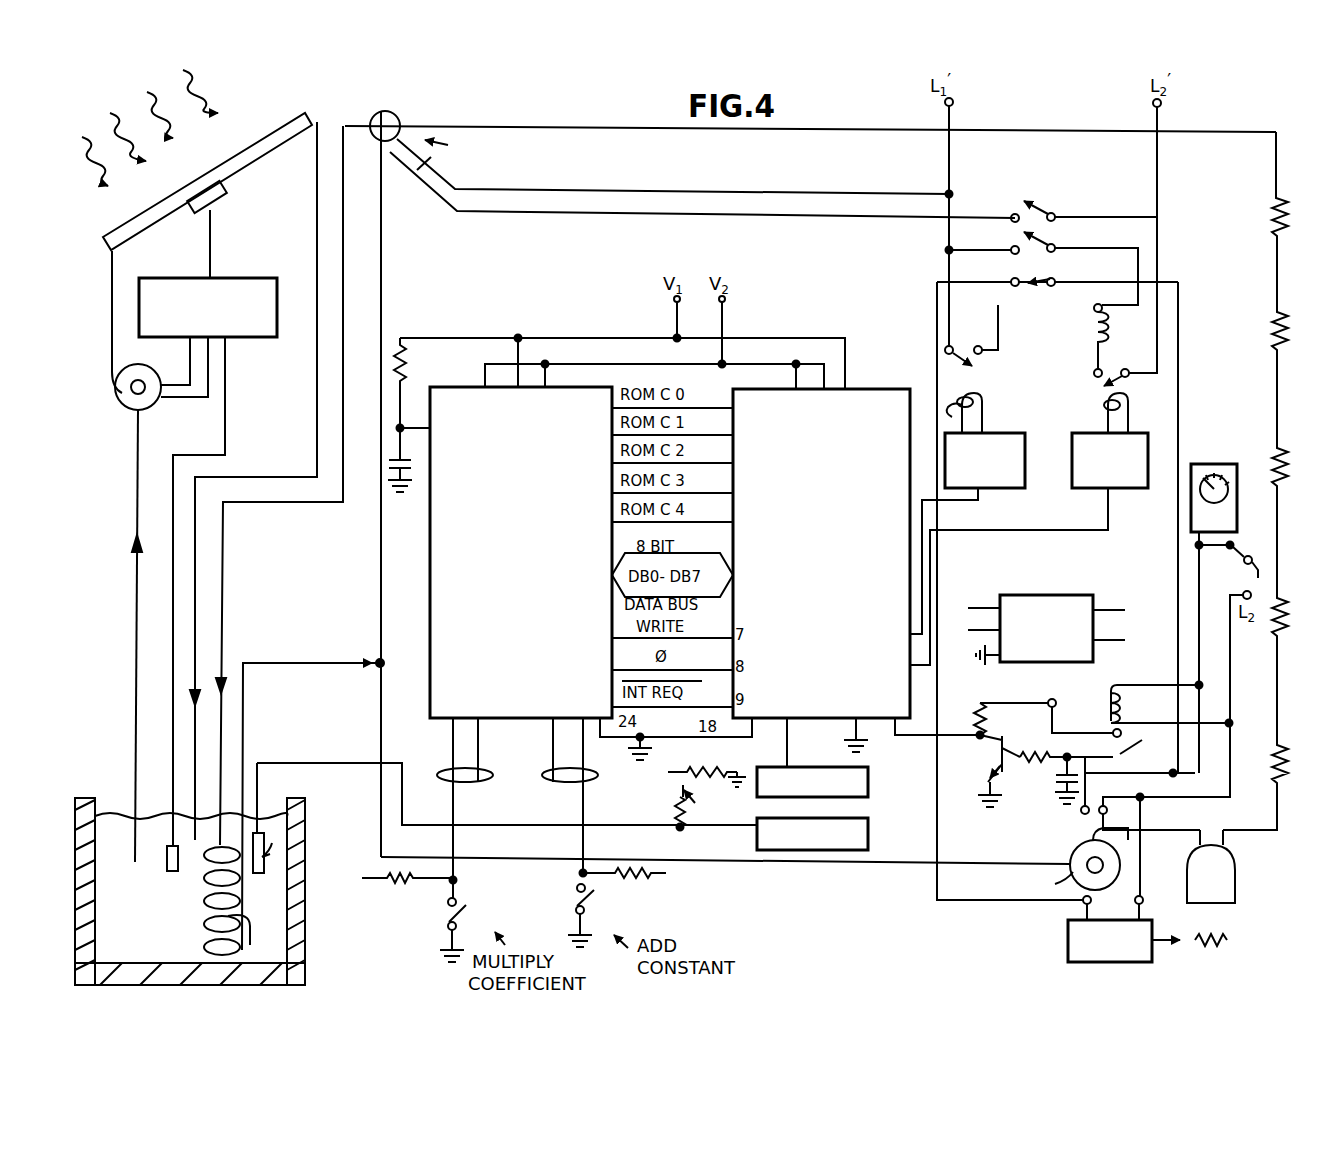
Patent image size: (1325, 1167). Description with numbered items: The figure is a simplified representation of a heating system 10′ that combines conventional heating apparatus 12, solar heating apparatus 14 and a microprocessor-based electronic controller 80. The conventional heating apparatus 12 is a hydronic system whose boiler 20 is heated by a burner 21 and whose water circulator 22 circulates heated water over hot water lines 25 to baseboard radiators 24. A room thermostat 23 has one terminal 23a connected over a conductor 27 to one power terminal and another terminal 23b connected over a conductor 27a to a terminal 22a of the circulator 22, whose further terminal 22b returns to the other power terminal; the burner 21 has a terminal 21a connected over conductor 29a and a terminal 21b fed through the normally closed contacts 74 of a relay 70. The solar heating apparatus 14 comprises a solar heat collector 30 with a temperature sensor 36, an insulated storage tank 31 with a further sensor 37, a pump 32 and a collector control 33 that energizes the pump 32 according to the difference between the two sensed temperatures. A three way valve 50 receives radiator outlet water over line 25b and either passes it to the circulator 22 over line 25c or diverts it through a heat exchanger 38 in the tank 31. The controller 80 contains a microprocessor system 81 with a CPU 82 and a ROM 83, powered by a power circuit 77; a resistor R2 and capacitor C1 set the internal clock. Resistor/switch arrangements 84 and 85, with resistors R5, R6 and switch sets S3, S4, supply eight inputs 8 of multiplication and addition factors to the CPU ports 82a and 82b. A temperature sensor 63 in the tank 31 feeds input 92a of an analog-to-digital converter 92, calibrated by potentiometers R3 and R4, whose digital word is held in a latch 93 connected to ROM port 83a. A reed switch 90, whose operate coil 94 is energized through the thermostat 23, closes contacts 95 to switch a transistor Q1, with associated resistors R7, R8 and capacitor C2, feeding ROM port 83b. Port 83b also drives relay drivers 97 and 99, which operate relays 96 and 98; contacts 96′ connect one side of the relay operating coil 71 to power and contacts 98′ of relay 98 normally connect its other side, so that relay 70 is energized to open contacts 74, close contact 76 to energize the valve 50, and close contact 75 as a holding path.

The solar heat collector 30 is at (313, 119).
The temperature sensor 36 is at (222, 202).
The collector control 33 is at (277, 303).
The pump 32 is at (150, 410).
The solar heating apparatus 14 is at (128, 497).
The three way valve 50 is at (374, 138).
The line 25c is at (383, 300).
The insulated storage tank 31 is at (251, 893).
The sensor 37 is at (160, 850).
The heat exchanger 38 is at (237, 903).
The temperature sensor 63 is at (262, 845).
The electronic controller 80 is at (814, 307).
The central processing unit 82 is at (521, 552).
The read only memory 83 is at (821, 553).
The input/output port 82a is at (448, 726).
The input/output port 82b is at (550, 726).
The inputs 8 is at (530, 785).
The input/output port 83a is at (773, 726).
The input/output port 83b is at (895, 742).
The latch 93 is at (792, 732).
The microprocessor system 81 is at (660, 793).
The analog-to-digital converter 92 is at (842, 850).
The input 92a is at (753, 834).
The resistor/switch arrangement 84 is at (400, 873).
The resistor/switch arrangement 85 is at (574, 874).
The heating system 10′ is at (800, 996).
The contact 76 is at (1048, 202).
The contact 75 is at (1048, 244).
The normally closed contacts 74 is at (1030, 280).
The relay 70 is at (1210, 355).
The relay operating coil 71 is at (1086, 332).
The normally open contacts 96′ is at (984, 360).
The relay contact 98′ is at (1098, 381).
The relay 96 is at (980, 406).
The relay driver 97 is at (1002, 434).
The relay 98 is at (1104, 414).
The relay driver 99 is at (1072, 452).
The thermostat 23 is at (1191, 510).
The terminal 23b is at (1195, 547).
The terminal 23a is at (1234, 561).
The conductor 27 is at (1228, 553).
The power circuit 77 is at (1082, 594).
The conductor 27a is at (1195, 662).
The reed switch 90 is at (1098, 676).
The operate coil 94 is at (1110, 708).
The normally open contacts 95 is at (1158, 747).
The water circulator 22 is at (1034, 873).
The conventional heating apparatus 12 is at (955, 921).
The terminal 22a is at (1081, 812).
The terminal 22b is at (1125, 810).
The hot water lines 25 is at (1248, 828).
The line 25b is at (1249, 132).
The baseboard radiators 24 is at (1268, 206).
The boiler 20 is at (1225, 890).
The conductor 29a is at (1145, 842).
The terminal 21a is at (1143, 900).
The terminal 21b is at (1083, 903).
The burner 21 is at (1068, 956).
The resistor R2 is at (419, 383).
The capacitor C1 is at (394, 468).
The calibration potentiometer R3 is at (704, 808).
The calibration potentiometer R4 is at (697, 765).
The resistor R5 is at (403, 885).
The resistor R6 is at (648, 876).
The resistor R7 is at (1042, 752).
The resistor R8 is at (973, 718).
The capacitor C2 is at (1052, 786).
The transistor Q1 is at (990, 757).
The switch set S3 is at (469, 920).
The switch set S4 is at (596, 909).